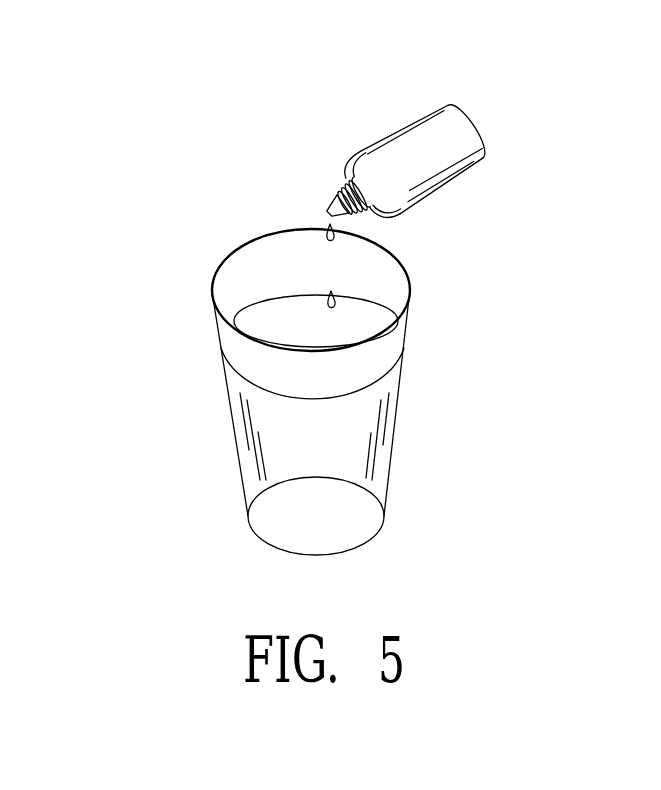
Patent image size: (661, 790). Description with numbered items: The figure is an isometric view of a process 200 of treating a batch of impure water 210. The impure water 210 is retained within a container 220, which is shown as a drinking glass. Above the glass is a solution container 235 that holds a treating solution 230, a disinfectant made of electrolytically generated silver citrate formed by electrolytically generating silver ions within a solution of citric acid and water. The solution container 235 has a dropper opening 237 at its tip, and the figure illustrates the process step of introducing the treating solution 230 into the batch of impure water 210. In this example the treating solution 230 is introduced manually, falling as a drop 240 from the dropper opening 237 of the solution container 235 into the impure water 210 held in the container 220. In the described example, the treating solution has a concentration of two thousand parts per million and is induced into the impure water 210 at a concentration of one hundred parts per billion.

The process 200 is at (268, 114).
The impure water 210 is at (272, 318).
The container 220 is at (223, 388).
The treating solution 230 is at (417, 140).
The solution container 235 is at (440, 176).
The dropper opening 237 is at (340, 213).
The drop 240 is at (328, 236).